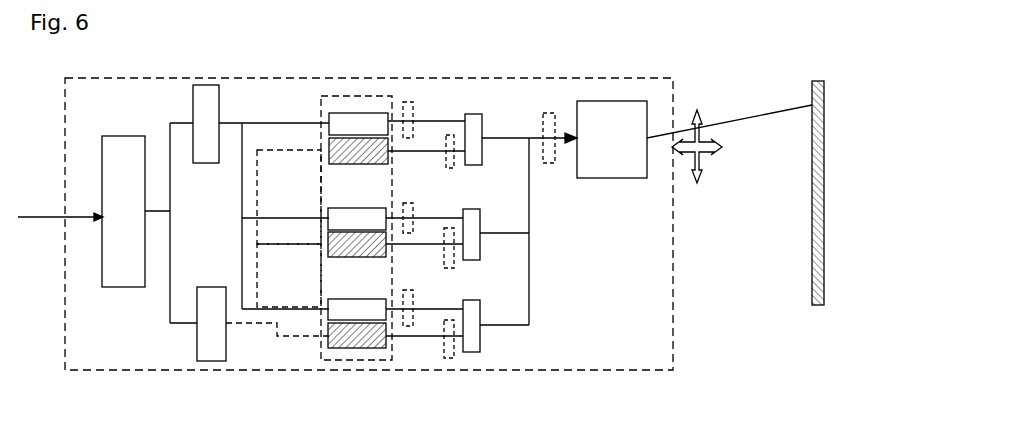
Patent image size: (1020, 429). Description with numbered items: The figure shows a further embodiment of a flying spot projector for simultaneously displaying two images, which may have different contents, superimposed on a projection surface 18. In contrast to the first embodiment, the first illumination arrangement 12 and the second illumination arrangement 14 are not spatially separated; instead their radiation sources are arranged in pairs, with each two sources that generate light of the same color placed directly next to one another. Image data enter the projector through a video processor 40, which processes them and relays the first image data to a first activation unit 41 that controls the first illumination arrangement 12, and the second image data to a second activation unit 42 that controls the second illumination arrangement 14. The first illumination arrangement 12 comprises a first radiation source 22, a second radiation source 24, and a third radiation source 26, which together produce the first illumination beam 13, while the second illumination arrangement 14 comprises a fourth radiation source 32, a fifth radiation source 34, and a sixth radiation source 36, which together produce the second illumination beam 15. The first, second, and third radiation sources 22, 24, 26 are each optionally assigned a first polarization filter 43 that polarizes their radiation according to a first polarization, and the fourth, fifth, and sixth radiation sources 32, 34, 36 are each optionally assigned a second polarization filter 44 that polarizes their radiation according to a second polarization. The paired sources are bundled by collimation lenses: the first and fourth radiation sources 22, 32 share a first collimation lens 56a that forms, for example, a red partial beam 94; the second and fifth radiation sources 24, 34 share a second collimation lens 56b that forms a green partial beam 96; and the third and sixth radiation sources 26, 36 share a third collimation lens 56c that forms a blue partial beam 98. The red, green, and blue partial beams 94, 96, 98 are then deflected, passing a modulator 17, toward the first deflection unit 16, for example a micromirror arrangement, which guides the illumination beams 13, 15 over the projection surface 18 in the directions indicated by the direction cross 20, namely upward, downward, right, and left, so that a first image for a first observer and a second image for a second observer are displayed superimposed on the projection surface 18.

The first illumination arrangement 12 is at (369, 206).
The second illumination arrangement 14 is at (322, 117).
The first illumination beam 13 is at (673, 134).
The second illumination beam 15 is at (738, 119).
The first deflection unit 16 is at (612, 101).
The modulator 17 is at (547, 113).
The projection surface 18 is at (825, 198).
The direction cross 20 is at (711, 165).
The first radiation source 22 is at (353, 113).
The second radiation source 24 is at (328, 208).
The third radiation source 26 is at (328, 300).
The fourth radiation source 32 is at (363, 165).
The fifth radiation source 34 is at (358, 258).
The sixth radiation source 36 is at (358, 348).
The video processor 40 is at (102, 210).
The first activation unit 41 is at (193, 114).
The second activation unit 42 is at (197, 331).
The first polarization filter 43 is at (407, 102).
The second polarization filter 44 is at (447, 135).
The first collimation lens 56a is at (472, 114).
The second collimation lens 56b is at (470, 209).
The third collimation lens 56c is at (470, 300).
The red partial beam 94 is at (497, 138).
The green partial beam 96 is at (510, 233).
The blue partial beam 98 is at (499, 326).